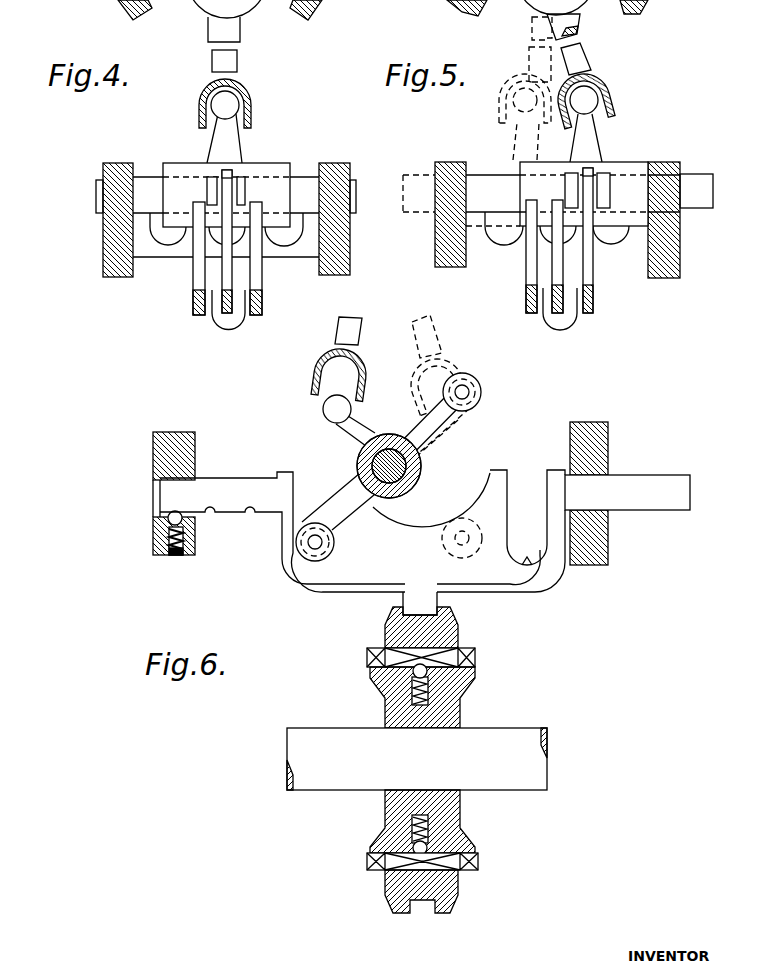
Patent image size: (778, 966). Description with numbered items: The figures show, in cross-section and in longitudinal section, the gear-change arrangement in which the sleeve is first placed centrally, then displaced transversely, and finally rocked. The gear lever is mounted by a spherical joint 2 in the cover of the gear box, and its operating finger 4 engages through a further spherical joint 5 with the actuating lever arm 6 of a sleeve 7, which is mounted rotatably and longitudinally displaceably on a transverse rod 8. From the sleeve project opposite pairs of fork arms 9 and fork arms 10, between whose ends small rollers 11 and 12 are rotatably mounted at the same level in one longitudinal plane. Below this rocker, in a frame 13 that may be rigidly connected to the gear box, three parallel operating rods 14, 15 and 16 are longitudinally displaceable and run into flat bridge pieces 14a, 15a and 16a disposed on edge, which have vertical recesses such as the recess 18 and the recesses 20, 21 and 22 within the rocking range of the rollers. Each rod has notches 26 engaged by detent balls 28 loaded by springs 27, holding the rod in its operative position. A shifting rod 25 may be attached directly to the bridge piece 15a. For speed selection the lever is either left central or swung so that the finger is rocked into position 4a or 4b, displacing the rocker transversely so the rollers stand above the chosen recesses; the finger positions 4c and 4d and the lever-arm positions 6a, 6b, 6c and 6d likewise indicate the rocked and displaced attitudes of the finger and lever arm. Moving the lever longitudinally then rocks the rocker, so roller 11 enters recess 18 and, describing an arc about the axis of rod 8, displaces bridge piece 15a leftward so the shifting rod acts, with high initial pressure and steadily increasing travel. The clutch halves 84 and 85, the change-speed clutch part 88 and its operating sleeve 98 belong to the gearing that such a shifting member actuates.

In FIG. 4, the spherical joint 2 is at (203, 8).
In FIG. 4, the operating finger 4 is at (228, 62).
In FIG. 5, the rocked position of operating finger 4a is at (580, 62).
In FIG. 5, the rocked position of operating finger 4b is at (528, 62).
In FIG. 6, the connecting link (position c) 4c is at (353, 340).
In FIG. 6, the connecting link (position d) 4d is at (442, 330).
In FIG. 4, the spherical joint 5 is at (240, 100).
In FIG. 5, the spherical joint 5 is at (592, 102).
In FIG. 6, the spherical joint 5 is at (325, 412).
In FIG. 4, the actuating lever arm 6 is at (232, 147).
In FIG. 5, the arm (position a) 6a is at (594, 146).
In FIG. 5, the arm (position b) 6b is at (515, 140).
In FIG. 6, the arm (position c) 6c is at (345, 428).
In FIG. 6, the arm (position d) 6d is at (455, 420).
In FIG. 4, the sleeve 7 is at (170, 186).
In FIG. 5, the sleeve 7 is at (680, 228).
In FIG. 6, the sleeve 7 is at (413, 490).
In FIG. 4, the transverse rod 8 is at (150, 178).
In FIG. 5, the transverse rod 8 is at (700, 174).
In FIG. 6, the transverse rod 8 is at (420, 466).
In FIG. 6, the fork arms 9 is at (330, 505).
In FIG. 4, the fork arms 10 is at (250, 177).
In FIG. 5, the fork arms 10 is at (570, 185).
In FIG. 6, the fork arms 10 is at (412, 417).
In FIG. 6, the roller 11 is at (310, 543).
In FIG. 4, the roller 12 is at (220, 175).
In FIG. 5, the roller 12 is at (608, 166).
In FIG. 6, the roller 12 is at (481, 392).
In FIG. 4, the frame 13 is at (103, 250).
In FIG. 5, the frame 13 is at (436, 256).
In FIG. 6, the frame 13 is at (153, 445).
In FIG. 5, the operating rod 14 is at (622, 240).
In FIG. 4, the bridge piece 14a is at (262, 315).
In FIG. 5, the bridge piece 14a is at (595, 313).
In FIG. 4, the operating rod 15 is at (247, 237).
In FIG. 5, the operating rod 15 is at (567, 240).
In FIG. 6, the operating rod 15 is at (165, 495).
In FIG. 4, the bridge piece 15a is at (226, 322).
In FIG. 5, the bridge piece 15a is at (556, 312).
In FIG. 6, the bridge piece 15a is at (520, 593).
In FIG. 4, the operating rod 16 is at (162, 246).
In FIG. 5, the operating rod 16 is at (497, 246).
In FIG. 4, the bridge piece 16a is at (195, 315).
In FIG. 5, the bridge piece 16a is at (533, 311).
In FIG. 6, the recess 18 is at (310, 560).
In FIG. 4, the recess 20 is at (256, 277).
In FIG. 5, the recess 20 is at (595, 282).
In FIG. 4, the recess 21 is at (222, 265).
In FIG. 5, the recess 21 is at (555, 256).
In FIG. 6, the recess 21 is at (533, 562).
In FIG. 4, the recess 22 is at (197, 285).
In FIG. 5, the recess 22 is at (528, 282).
In FIG. 4, the shifting rod 25 is at (218, 328).
In FIG. 5, the shifting rod 25 is at (568, 330).
In FIG. 6, the shifting rod 25 is at (403, 600).
In FIG. 6, the notches 26 is at (252, 516).
In FIG. 6, the springs 27 is at (167, 540).
In FIG. 6, the detent balls 28 is at (182, 522).
In FIG. 6, the clutch half 84 is at (367, 656).
In FIG. 6, the clutch half 85 is at (475, 656).
In FIG. 6, the change-speed clutch part 88 is at (385, 838).
In FIG. 6, the sleeve 98 is at (430, 905).